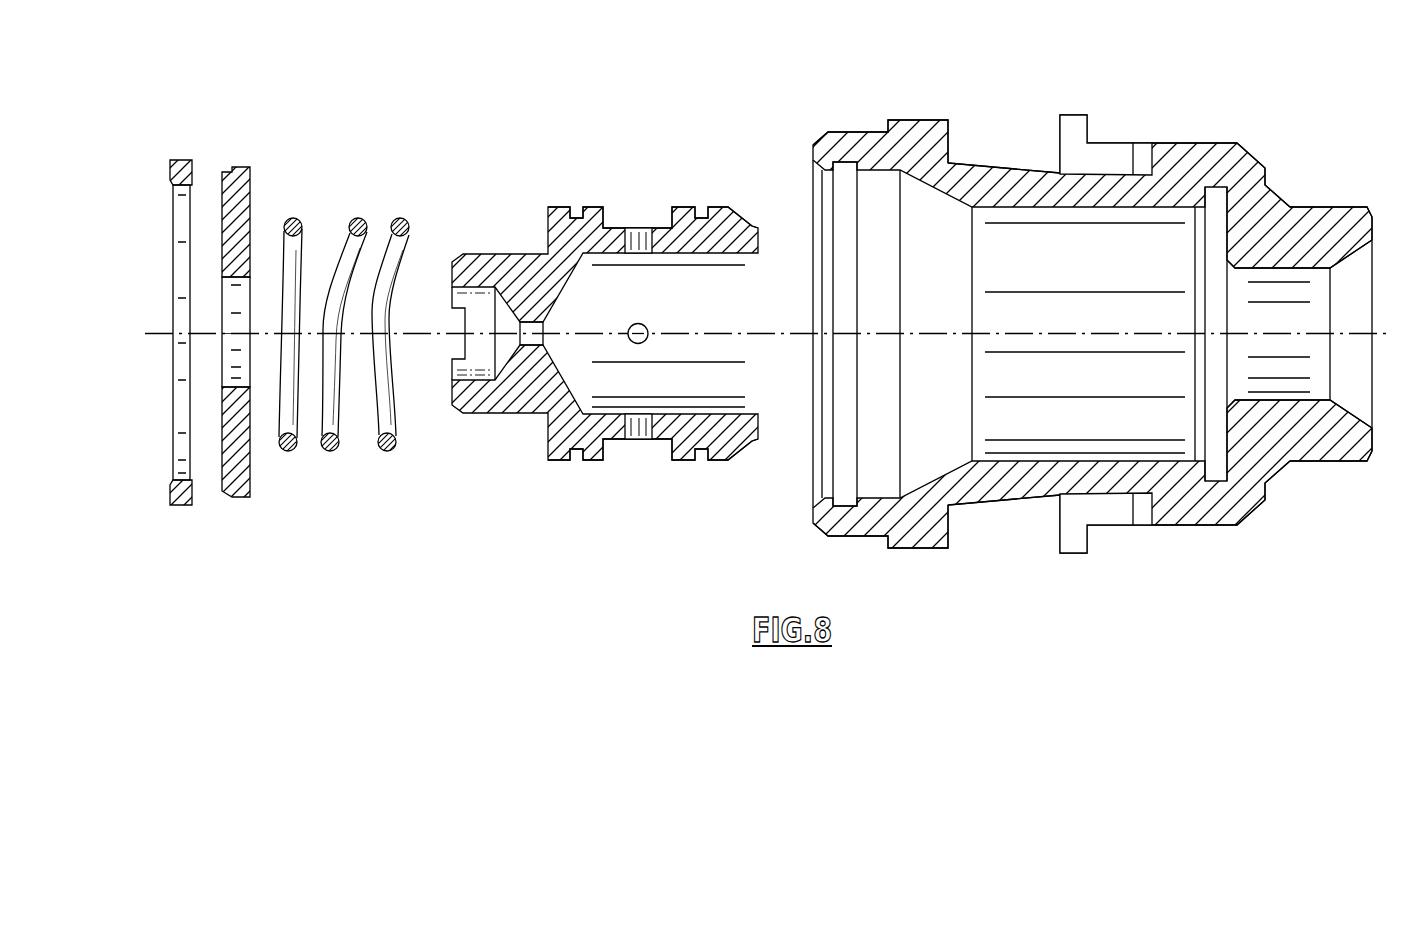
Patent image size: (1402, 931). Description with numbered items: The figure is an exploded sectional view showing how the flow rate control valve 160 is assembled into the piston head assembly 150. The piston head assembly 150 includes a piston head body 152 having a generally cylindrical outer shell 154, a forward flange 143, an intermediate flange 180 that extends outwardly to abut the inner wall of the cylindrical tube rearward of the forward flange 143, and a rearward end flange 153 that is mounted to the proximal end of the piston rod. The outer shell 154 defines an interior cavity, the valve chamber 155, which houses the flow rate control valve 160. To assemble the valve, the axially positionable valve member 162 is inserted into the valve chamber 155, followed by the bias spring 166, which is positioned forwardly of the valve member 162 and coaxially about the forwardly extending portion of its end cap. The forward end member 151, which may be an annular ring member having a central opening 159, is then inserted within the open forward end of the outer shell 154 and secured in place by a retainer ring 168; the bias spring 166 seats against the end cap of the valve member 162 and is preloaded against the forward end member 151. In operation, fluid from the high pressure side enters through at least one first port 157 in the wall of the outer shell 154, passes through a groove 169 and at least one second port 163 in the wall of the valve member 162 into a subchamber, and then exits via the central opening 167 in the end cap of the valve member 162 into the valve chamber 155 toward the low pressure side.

The forward flange 143 is at (903, 120).
The piston head assembly 150 is at (1092, 309).
The forward end member 151 is at (243, 167).
The piston head body 152 is at (1180, 134).
The rearward end flange 153 is at (1316, 207).
The outer shell 154 is at (1010, 165).
The valve chamber 155 is at (1087, 386).
The first port 157 is at (1110, 197).
The central opening 159 is at (225, 360).
The flow rate control valve 160 is at (600, 387).
The valve member 162 is at (506, 244).
The second port 163 is at (645, 254).
The bias spring 166 is at (357, 218).
The central opening 167 is at (541, 340).
The retainer ring 168 is at (183, 158).
The groove 169 is at (650, 215).
The intermediate flange 180 is at (1074, 115).